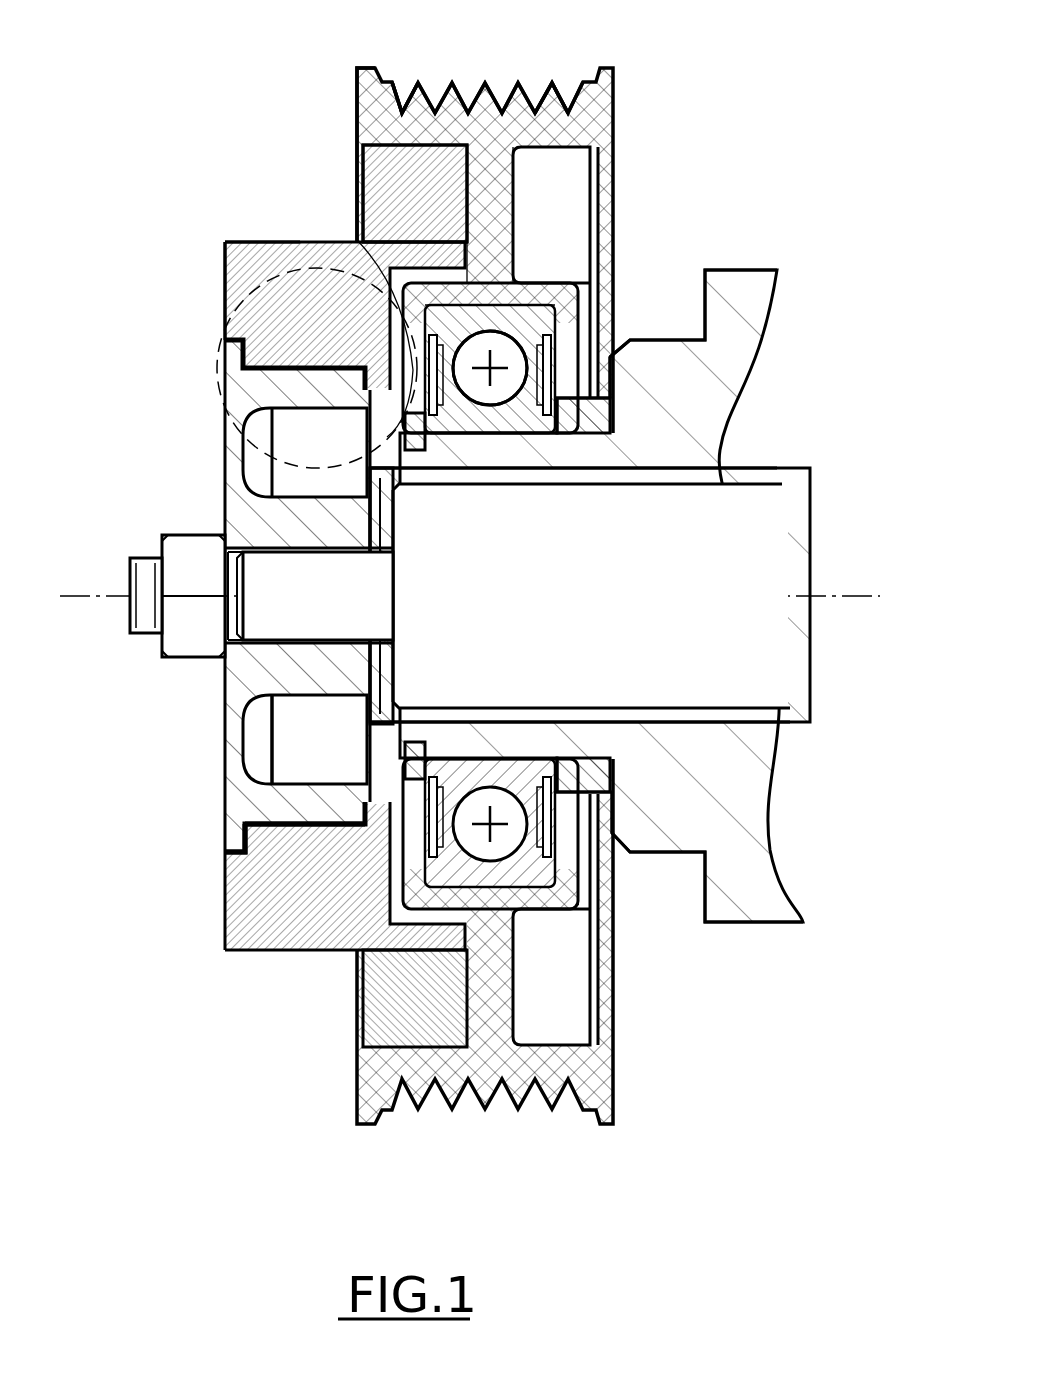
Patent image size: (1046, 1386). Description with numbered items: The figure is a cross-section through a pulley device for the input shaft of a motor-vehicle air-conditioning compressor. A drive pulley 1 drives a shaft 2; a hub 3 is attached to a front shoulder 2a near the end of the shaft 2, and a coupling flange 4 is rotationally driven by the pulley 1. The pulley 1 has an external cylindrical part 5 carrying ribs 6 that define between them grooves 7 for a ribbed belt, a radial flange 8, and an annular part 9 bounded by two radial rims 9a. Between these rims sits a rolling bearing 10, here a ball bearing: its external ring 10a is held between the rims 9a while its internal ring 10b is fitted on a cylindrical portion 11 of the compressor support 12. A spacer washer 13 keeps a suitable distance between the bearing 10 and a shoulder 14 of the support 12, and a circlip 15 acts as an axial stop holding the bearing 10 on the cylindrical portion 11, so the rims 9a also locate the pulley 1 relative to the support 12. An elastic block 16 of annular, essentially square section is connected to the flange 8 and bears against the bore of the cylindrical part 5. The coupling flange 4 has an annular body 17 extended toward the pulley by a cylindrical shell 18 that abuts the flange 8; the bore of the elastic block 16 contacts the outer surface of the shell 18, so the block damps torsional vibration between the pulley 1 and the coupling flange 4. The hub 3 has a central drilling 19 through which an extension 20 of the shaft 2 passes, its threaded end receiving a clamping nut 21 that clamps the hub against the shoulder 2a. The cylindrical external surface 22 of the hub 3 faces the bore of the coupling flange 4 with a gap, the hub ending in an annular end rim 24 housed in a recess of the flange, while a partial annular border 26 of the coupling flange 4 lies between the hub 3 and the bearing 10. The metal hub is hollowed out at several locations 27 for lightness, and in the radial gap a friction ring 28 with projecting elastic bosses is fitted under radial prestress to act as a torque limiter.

The drive pulley 1 is at (638, 77).
The shaft 2 is at (700, 506).
The front shoulder 2a is at (273, 573).
The hub 3 is at (237, 503).
The coupling flange 4 is at (237, 240).
The external cylindrical part 5 is at (487, 78).
The ribs 6 is at (551, 80).
The grooves 7 is at (438, 93).
The radial flange 8 is at (500, 205).
The annular part 9 is at (540, 286).
The radial rims 9a is at (423, 252).
The rolling bearing 10 is at (556, 362).
The external ring 10a is at (540, 290).
The internal ring 10b is at (537, 420).
The cylindrical portion 11 is at (512, 453).
The compressor support 12 is at (735, 345).
The spacer washer 13 is at (598, 410).
The shoulder 14 is at (580, 830).
The circlip 15 is at (413, 425).
The elastic block 16 is at (370, 126).
The annular body 17 is at (300, 325).
The cylindrical shell 18 is at (387, 167).
The central drilling 19 is at (310, 640).
The extension 20 is at (225, 540).
The clamping nut 21 is at (177, 625).
The cylindrical external surface 22 is at (303, 823).
The annular end rim 24 is at (230, 845).
The partial annular border 26 is at (235, 348).
The hollowed-out locations 27 is at (273, 742).
The friction ring 28 is at (303, 830).